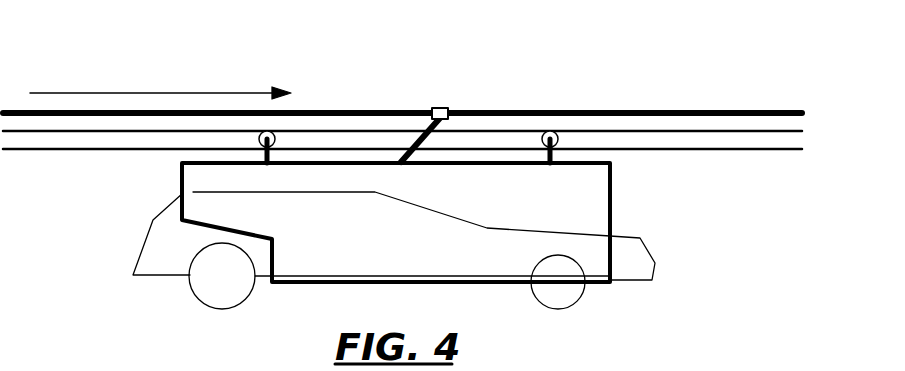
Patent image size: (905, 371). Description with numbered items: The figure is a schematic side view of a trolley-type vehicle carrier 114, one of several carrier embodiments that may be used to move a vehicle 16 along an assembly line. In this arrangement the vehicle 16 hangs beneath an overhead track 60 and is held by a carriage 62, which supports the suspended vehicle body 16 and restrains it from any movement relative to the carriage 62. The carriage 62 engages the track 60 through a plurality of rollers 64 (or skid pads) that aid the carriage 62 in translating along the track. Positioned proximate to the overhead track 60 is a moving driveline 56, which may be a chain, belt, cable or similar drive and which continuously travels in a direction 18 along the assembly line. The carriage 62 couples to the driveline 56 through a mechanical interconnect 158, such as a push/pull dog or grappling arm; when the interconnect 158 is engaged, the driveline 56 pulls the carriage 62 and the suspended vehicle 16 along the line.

The vehicle 16 is at (657, 268).
The direction 18 is at (185, 92).
The moving driveline 56 is at (509, 110).
The overhead track 60 is at (707, 138).
The carriage 62 is at (181, 172).
The rollers 64 is at (563, 138).
The trolley-type vehicle carrier 114 is at (156, 199).
The mechanical interconnect 158 is at (432, 120).